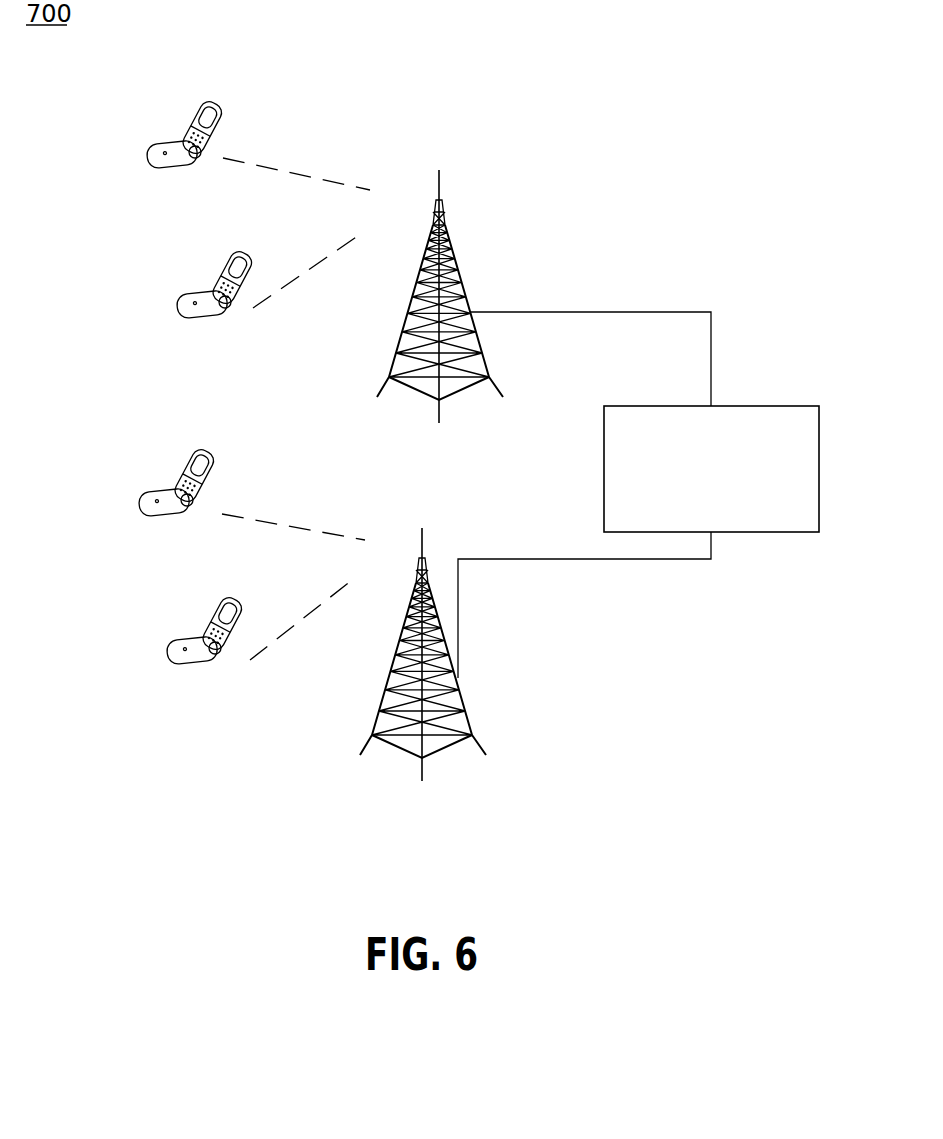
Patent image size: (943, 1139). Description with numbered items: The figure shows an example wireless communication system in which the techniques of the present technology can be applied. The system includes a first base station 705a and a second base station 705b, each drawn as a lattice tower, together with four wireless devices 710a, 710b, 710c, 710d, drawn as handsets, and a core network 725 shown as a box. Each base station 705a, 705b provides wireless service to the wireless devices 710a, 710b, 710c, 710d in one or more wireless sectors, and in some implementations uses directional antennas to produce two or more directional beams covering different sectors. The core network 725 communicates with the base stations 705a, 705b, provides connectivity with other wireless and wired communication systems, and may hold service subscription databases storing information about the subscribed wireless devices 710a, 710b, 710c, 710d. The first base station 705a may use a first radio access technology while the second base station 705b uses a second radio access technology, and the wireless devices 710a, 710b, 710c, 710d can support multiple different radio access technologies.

The first base station 705a is at (452, 252).
The second base station 705b is at (428, 570).
The wireless device 710a is at (180, 107).
The wireless device 710b is at (210, 257).
The wireless device 710c is at (140, 483).
The wireless device 710d is at (200, 604).
The core network 725 is at (622, 406).